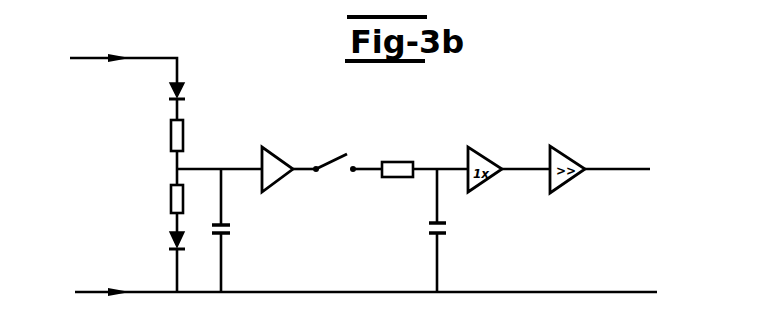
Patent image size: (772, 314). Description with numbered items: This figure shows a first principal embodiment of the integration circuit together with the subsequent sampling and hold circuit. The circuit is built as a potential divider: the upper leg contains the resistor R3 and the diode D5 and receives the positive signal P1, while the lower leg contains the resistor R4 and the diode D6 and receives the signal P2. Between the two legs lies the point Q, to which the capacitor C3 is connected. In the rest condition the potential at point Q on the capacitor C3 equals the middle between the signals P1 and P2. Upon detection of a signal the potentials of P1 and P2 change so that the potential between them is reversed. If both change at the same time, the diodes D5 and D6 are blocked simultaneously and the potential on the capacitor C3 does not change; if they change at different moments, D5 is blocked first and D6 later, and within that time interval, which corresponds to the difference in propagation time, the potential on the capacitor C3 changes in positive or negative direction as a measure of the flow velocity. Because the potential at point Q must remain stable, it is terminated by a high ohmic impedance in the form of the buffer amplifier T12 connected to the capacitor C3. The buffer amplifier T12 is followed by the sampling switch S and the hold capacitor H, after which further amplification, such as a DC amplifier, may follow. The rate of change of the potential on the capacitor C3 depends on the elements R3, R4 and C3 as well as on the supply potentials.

The signal P1 is at (110, 67).
The signal P2 is at (66, 280).
The diode D5 is at (190, 93).
The resistor R3 is at (163, 135).
The resistor R4 is at (163, 199).
The diode D6 is at (160, 243).
The point Q is at (219, 159).
The capacitor C3 is at (233, 230).
The buffer amplifier T12 is at (277, 162).
The sampling circuit S is at (329, 150).
The hold circuit H is at (425, 230).